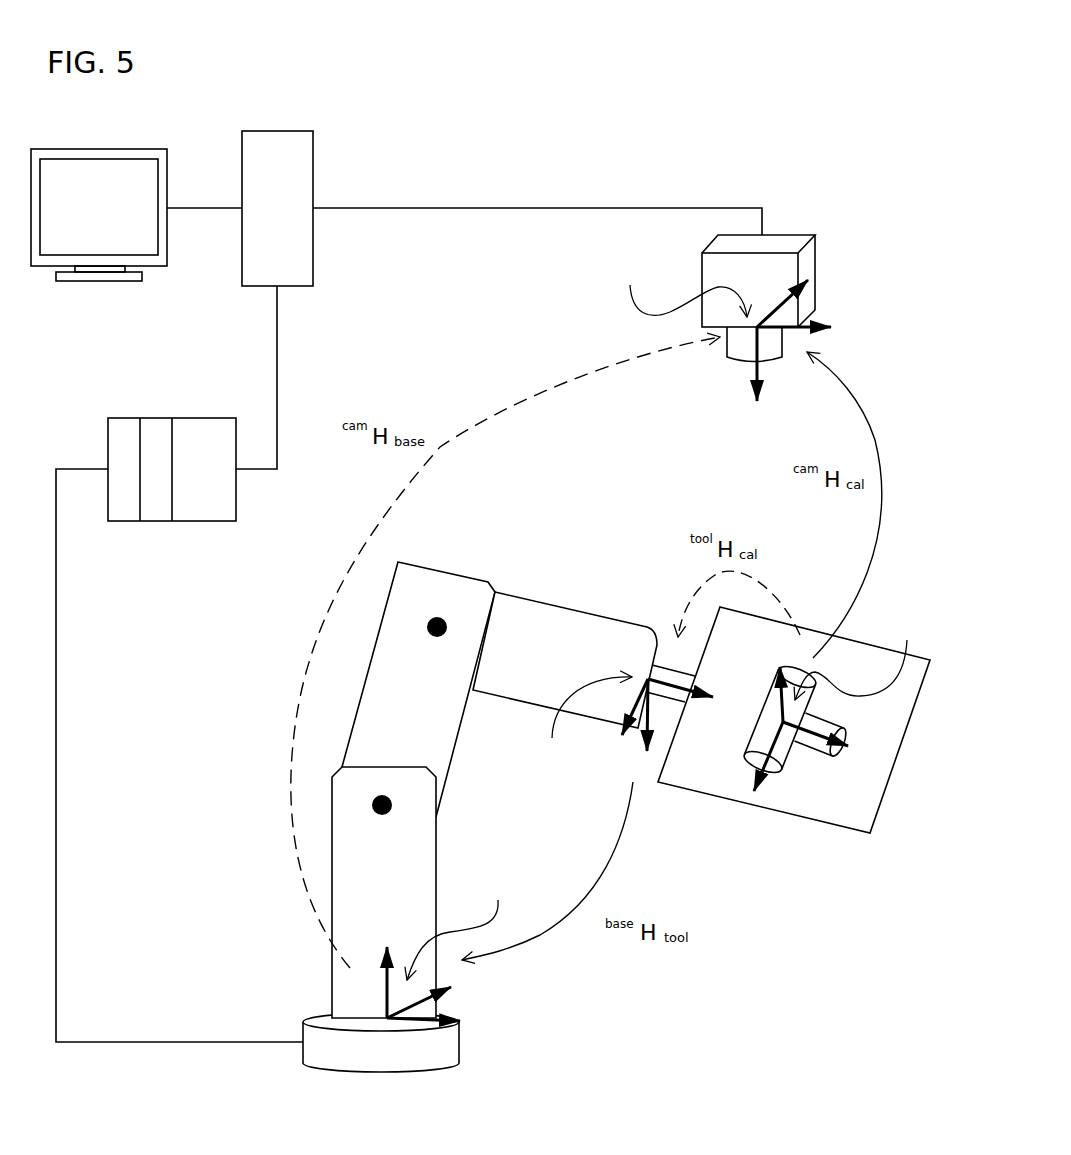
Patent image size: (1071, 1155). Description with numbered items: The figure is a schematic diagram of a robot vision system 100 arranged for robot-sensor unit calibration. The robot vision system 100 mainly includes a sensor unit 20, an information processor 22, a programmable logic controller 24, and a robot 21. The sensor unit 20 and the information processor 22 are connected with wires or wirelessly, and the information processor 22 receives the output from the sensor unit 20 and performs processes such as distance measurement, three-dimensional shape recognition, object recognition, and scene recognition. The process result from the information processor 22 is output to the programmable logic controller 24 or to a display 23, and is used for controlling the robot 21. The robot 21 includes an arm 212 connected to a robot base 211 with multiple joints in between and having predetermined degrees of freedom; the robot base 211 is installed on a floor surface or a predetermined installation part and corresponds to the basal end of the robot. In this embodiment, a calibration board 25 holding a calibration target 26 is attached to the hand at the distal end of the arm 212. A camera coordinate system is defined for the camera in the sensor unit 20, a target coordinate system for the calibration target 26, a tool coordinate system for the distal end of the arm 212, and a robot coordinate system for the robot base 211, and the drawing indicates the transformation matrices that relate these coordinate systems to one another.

The robot vision system 100 is at (493, 173).
The sensor unit 20 is at (777, 232).
The robot 21 is at (277, 812).
The robot base 211 is at (314, 1012).
The arm 212 is at (562, 606).
The information processor 22 is at (277, 131).
The display 23 is at (105, 148).
The programmable logic controller (PLC) 24 is at (158, 418).
The calibration board 25 is at (895, 777).
The calibration target 26 is at (812, 753).